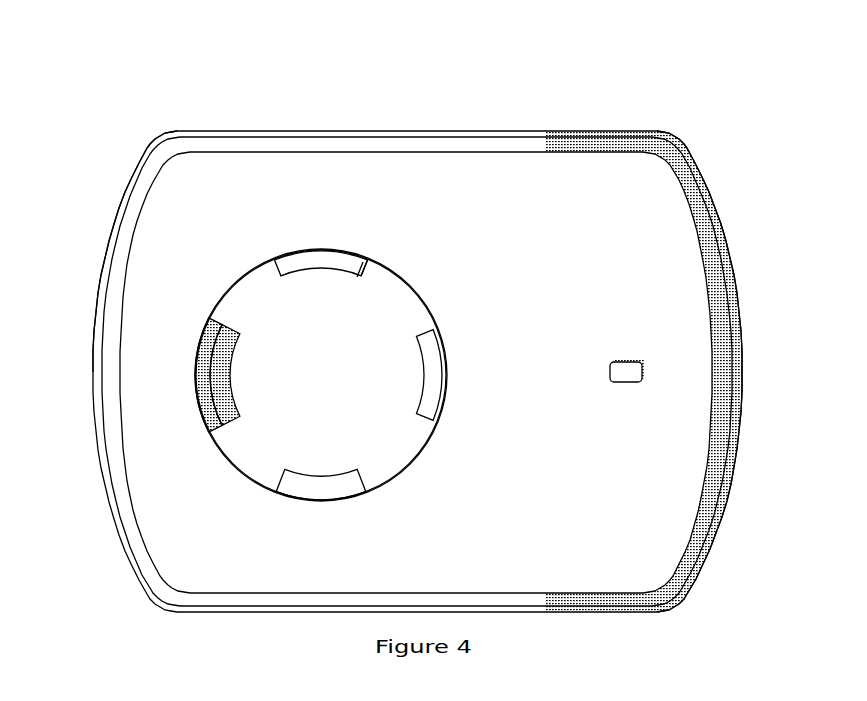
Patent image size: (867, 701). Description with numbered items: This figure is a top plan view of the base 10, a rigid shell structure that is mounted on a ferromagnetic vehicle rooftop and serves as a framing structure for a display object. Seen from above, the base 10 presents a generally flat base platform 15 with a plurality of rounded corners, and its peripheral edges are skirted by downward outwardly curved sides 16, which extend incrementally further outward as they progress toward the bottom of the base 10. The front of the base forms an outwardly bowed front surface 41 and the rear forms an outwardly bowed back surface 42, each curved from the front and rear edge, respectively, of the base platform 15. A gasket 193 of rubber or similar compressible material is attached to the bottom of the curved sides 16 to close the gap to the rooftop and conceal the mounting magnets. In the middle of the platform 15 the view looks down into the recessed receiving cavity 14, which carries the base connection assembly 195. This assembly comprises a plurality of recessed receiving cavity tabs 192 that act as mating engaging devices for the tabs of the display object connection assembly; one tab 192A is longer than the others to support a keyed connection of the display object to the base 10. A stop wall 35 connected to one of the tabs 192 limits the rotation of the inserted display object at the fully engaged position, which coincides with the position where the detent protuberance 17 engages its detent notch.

The base 10 is at (98, 242).
The recessed receiving cavity 14 is at (328, 372).
The flat base platform 15 is at (625, 285).
The downward outwardly curved sides 16 is at (567, 138).
The detent protuberance 17 is at (642, 362).
The stop wall 35 is at (362, 266).
The outwardly bowed front surface of the base 41 is at (118, 393).
The outwardly bowed back surface of the base 42 is at (743, 378).
The recessed receiving cavity tabs 192 is at (315, 268).
The recessed receiving cavity tab 192A is at (197, 387).
The gasket 193 is at (112, 513).
The base connection assembly 195 is at (420, 460).